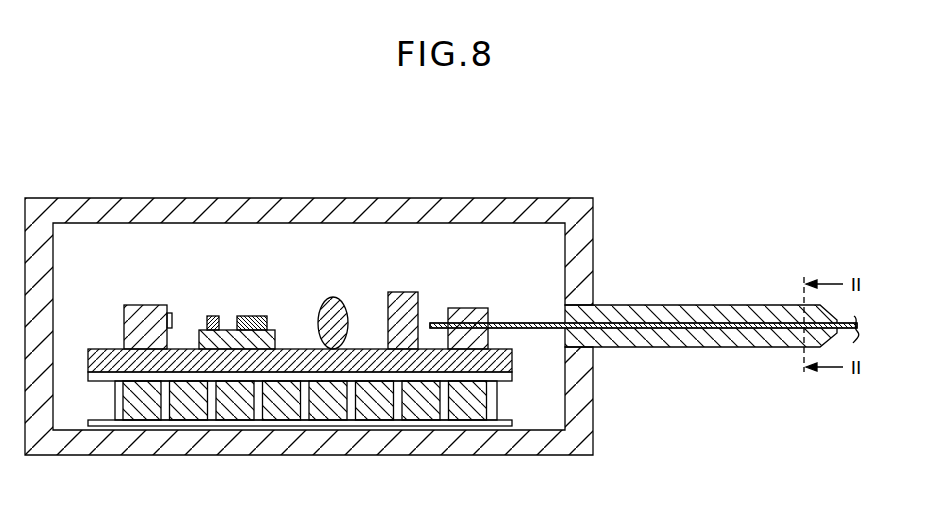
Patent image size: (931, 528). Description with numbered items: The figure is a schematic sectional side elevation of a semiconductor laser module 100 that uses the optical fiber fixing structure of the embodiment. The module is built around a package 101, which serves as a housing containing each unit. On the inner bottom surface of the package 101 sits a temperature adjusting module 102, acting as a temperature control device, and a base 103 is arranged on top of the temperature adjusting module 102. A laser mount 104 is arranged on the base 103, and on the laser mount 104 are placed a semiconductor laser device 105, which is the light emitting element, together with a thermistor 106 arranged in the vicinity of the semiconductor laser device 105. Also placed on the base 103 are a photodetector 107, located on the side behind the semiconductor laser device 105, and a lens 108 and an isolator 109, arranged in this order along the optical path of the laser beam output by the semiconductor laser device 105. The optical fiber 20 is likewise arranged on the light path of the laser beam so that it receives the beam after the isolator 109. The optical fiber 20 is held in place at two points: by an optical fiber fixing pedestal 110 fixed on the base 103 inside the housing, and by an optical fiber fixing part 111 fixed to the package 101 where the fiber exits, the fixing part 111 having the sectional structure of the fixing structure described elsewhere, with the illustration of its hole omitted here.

The semiconductor laser module 100 is at (722, 148).
The package 101 is at (43, 213).
The temperature adjusting module 102 is at (140, 406).
The base 103 is at (88, 360).
The laser mount 104 is at (275, 335).
The semiconductor laser device 105 is at (255, 316).
The thermistor 106 is at (214, 316).
The photodetector 107 is at (143, 305).
The lens 108 is at (333, 297).
The isolator 109 is at (405, 292).
The optical fiber fixing pedestal 110 is at (470, 308).
The optical fiber fixing part 111 is at (777, 305).
The optical fiber 20 is at (738, 348).